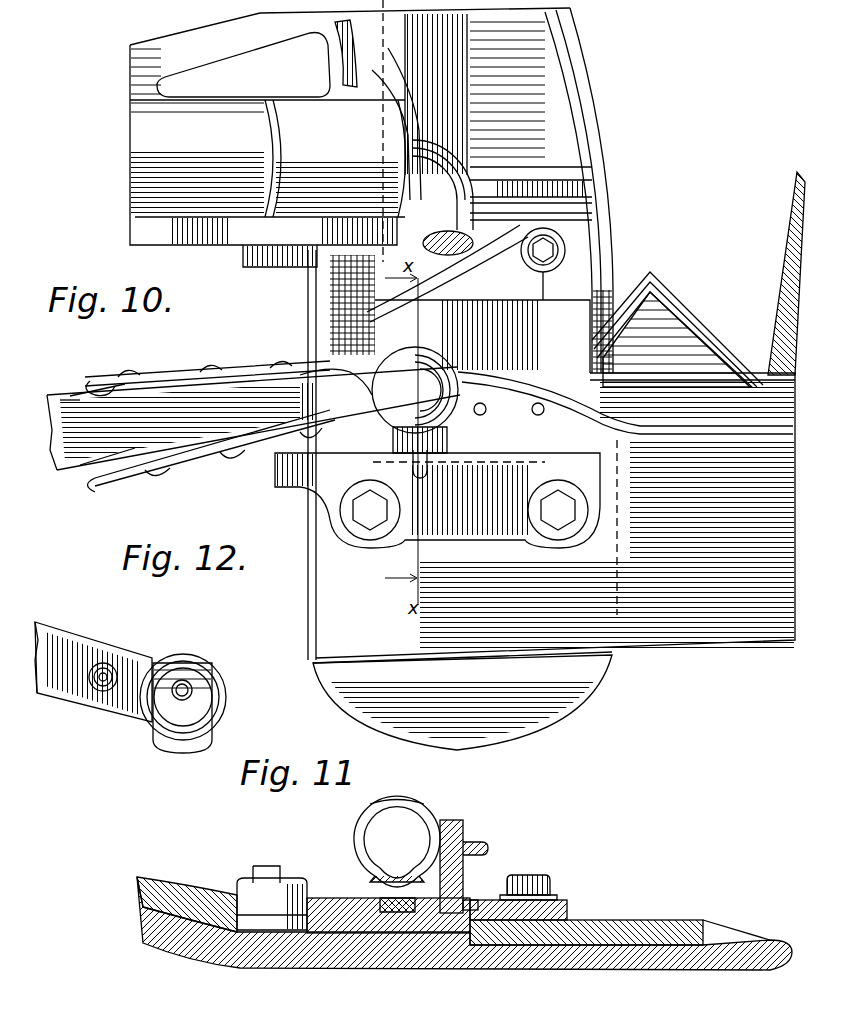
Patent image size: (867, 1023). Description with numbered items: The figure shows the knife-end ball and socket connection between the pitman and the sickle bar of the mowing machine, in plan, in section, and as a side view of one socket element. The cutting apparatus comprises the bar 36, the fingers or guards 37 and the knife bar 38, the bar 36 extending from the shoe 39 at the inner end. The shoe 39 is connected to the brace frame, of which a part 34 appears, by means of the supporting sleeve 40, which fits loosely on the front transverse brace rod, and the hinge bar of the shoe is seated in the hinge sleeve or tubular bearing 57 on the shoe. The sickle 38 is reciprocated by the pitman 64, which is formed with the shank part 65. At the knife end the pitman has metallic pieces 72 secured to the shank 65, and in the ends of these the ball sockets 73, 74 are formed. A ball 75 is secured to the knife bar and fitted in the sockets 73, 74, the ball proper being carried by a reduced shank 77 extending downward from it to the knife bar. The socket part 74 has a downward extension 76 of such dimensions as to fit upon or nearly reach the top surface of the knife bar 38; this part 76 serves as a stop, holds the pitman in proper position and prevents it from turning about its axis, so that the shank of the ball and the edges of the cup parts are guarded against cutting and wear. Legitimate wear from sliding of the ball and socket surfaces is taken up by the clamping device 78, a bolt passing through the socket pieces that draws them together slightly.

In FIG. 10, the part of the brace frame 34 is at (474, 243).
In FIG. 10, the bar 36 is at (750, 628).
In FIG. 11, the bar 36 is at (620, 925).
In FIG. 10, the fingers or guards 37 is at (415, 128).
In FIG. 10, the knife bar 38 is at (750, 428).
In FIG. 11, the knife bar 38 is at (393, 935).
In FIG. 10, the shoe 39 is at (599, 190).
In FIG. 11, the shoe 39 is at (495, 966).
In FIG. 10, the supporting sleeve 40 is at (350, 137).
In FIG. 10, the hinge sleeve or tubular bearing 57 is at (458, 70).
In FIG. 10, the pitman 64 is at (250, 435).
In FIG. 10, the shank part 65 is at (70, 400).
In FIG. 10, the metallic pieces 72 is at (240, 377).
In FIG. 12, the metallic pieces 72 is at (66, 695).
In FIG. 10, the ball socket 73 is at (440, 365).
In FIG. 11, the ball socket 73 is at (355, 845).
In FIG. 10, the socket part 74 is at (460, 420).
In FIG. 12, the socket part 74 is at (222, 682).
In FIG. 11, the socket part 74 is at (466, 832).
In FIG. 10, the ball 75 is at (466, 378).
In FIG. 11, the ball 75 is at (400, 812).
In FIG. 10, the downward extension 76 is at (432, 452).
In FIG. 12, the downward extension 76 is at (172, 752).
In FIG. 11, the downward extension 76 is at (500, 878).
In FIG. 11, the reduced shank 77 is at (498, 862).
In FIG. 10, the clamping device 78 is at (300, 375).